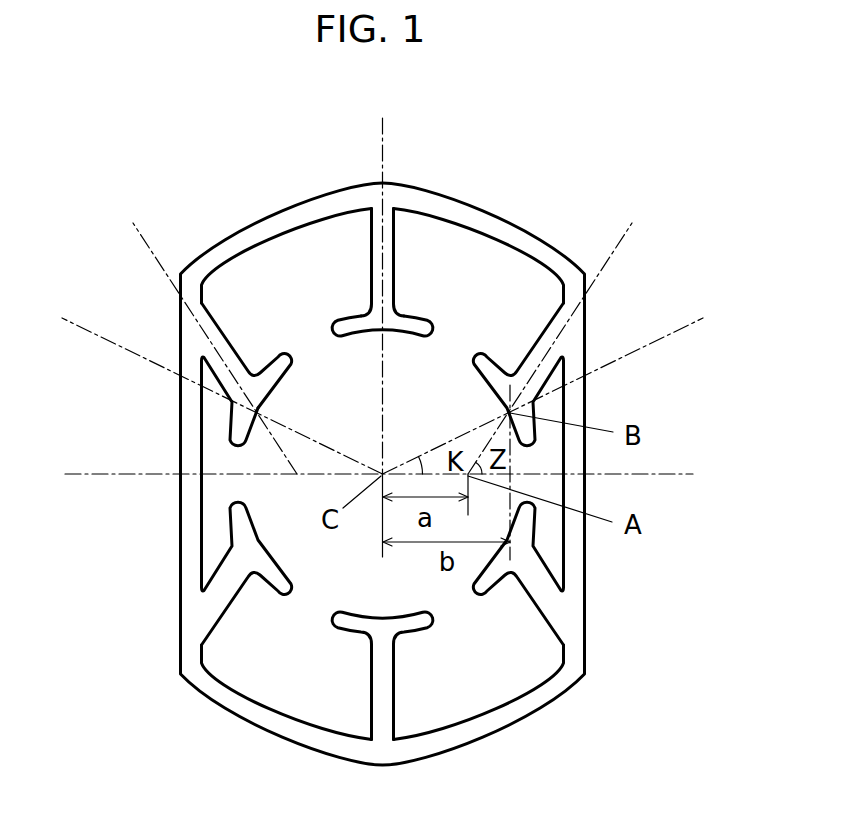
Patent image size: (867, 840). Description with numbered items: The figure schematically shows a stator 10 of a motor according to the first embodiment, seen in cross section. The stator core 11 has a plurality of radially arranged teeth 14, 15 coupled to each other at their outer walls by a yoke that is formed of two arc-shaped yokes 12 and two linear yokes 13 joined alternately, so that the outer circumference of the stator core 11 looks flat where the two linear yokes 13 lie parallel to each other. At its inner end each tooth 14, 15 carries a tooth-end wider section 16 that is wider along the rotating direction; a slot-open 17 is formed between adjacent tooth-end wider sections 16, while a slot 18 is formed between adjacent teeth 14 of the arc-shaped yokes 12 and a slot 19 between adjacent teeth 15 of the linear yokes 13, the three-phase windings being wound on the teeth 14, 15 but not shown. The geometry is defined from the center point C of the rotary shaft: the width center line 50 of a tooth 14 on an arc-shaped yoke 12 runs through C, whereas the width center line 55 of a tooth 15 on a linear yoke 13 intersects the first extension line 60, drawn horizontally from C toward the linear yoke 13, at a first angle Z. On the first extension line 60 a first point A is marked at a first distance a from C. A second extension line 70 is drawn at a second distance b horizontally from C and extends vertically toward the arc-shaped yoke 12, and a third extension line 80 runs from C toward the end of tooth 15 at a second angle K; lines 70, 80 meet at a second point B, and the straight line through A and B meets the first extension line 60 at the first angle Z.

The stator 10 is at (322, 187).
The stator core 11 is at (188, 569).
The arc-shaped yoke 12 is at (475, 213).
The linear yoke 13 is at (188, 440).
The tooth 14 is at (377, 233).
The tooth 15 is at (222, 356).
The tooth-end wider section 16 is at (347, 323).
The slot-open 17 is at (457, 343).
The slot 18 is at (308, 244).
The slot 19 is at (214, 410).
The width center line 50 is at (385, 138).
The width center line 55 is at (148, 238).
The first extension line 60 is at (682, 477).
The second extension line 70 is at (522, 506).
The third extension line 80 is at (675, 333).